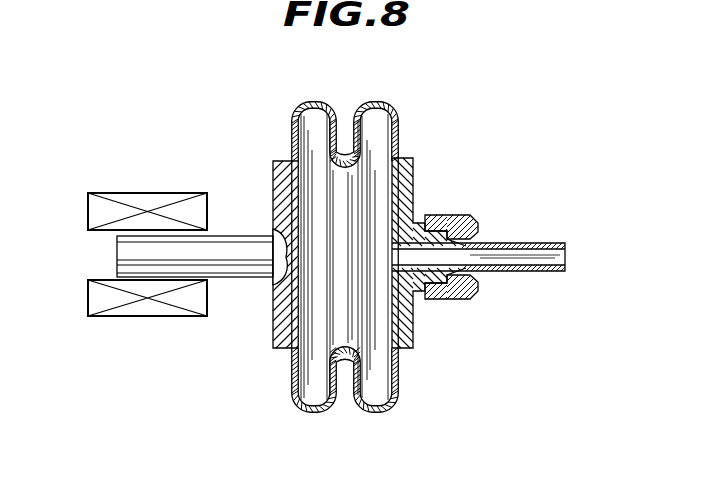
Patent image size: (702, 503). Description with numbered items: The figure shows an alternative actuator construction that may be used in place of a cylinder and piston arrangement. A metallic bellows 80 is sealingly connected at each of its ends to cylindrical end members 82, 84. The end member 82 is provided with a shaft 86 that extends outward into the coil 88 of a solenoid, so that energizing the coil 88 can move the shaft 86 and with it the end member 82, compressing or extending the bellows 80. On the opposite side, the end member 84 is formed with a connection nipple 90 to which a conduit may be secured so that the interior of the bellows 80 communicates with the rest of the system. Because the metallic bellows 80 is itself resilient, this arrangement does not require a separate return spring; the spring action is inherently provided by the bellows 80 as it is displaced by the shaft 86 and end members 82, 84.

The metallic bellows 80 is at (296, 385).
The cylindrical end member 82 is at (278, 323).
The cylindrical end member 84 is at (415, 337).
The shaft 86 is at (117, 255).
The coil 88 is at (90, 309).
The compression nut 90 is at (472, 292).